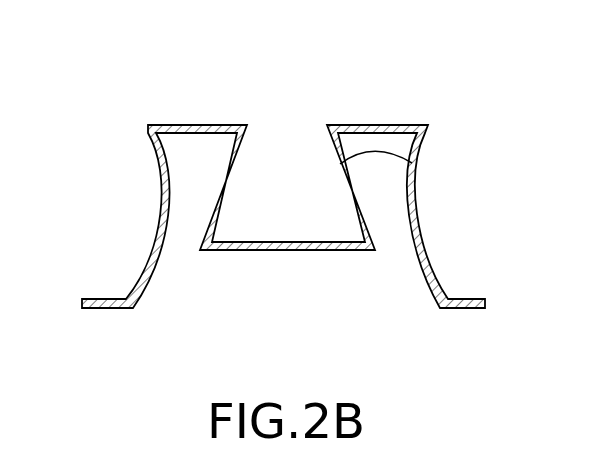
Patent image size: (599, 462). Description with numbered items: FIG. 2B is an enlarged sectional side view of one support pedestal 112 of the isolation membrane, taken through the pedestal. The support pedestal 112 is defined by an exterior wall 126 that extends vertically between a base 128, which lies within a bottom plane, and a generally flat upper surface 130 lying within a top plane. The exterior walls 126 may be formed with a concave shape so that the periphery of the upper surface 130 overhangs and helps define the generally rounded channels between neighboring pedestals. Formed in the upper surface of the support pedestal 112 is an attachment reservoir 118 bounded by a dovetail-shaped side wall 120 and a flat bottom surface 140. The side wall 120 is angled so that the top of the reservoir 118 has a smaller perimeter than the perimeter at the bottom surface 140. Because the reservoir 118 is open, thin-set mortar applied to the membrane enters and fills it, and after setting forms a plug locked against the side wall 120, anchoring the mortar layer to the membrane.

The support pedestal 112 is at (359, 82).
The attachment reservoir 118 is at (311, 216).
The dovetail-shaped side wall 120 is at (412, 163).
The exterior wall 126 is at (162, 193).
The base 128 is at (97, 308).
The upper surface 130 is at (188, 125).
The flat bottom surface 140 is at (343, 250).